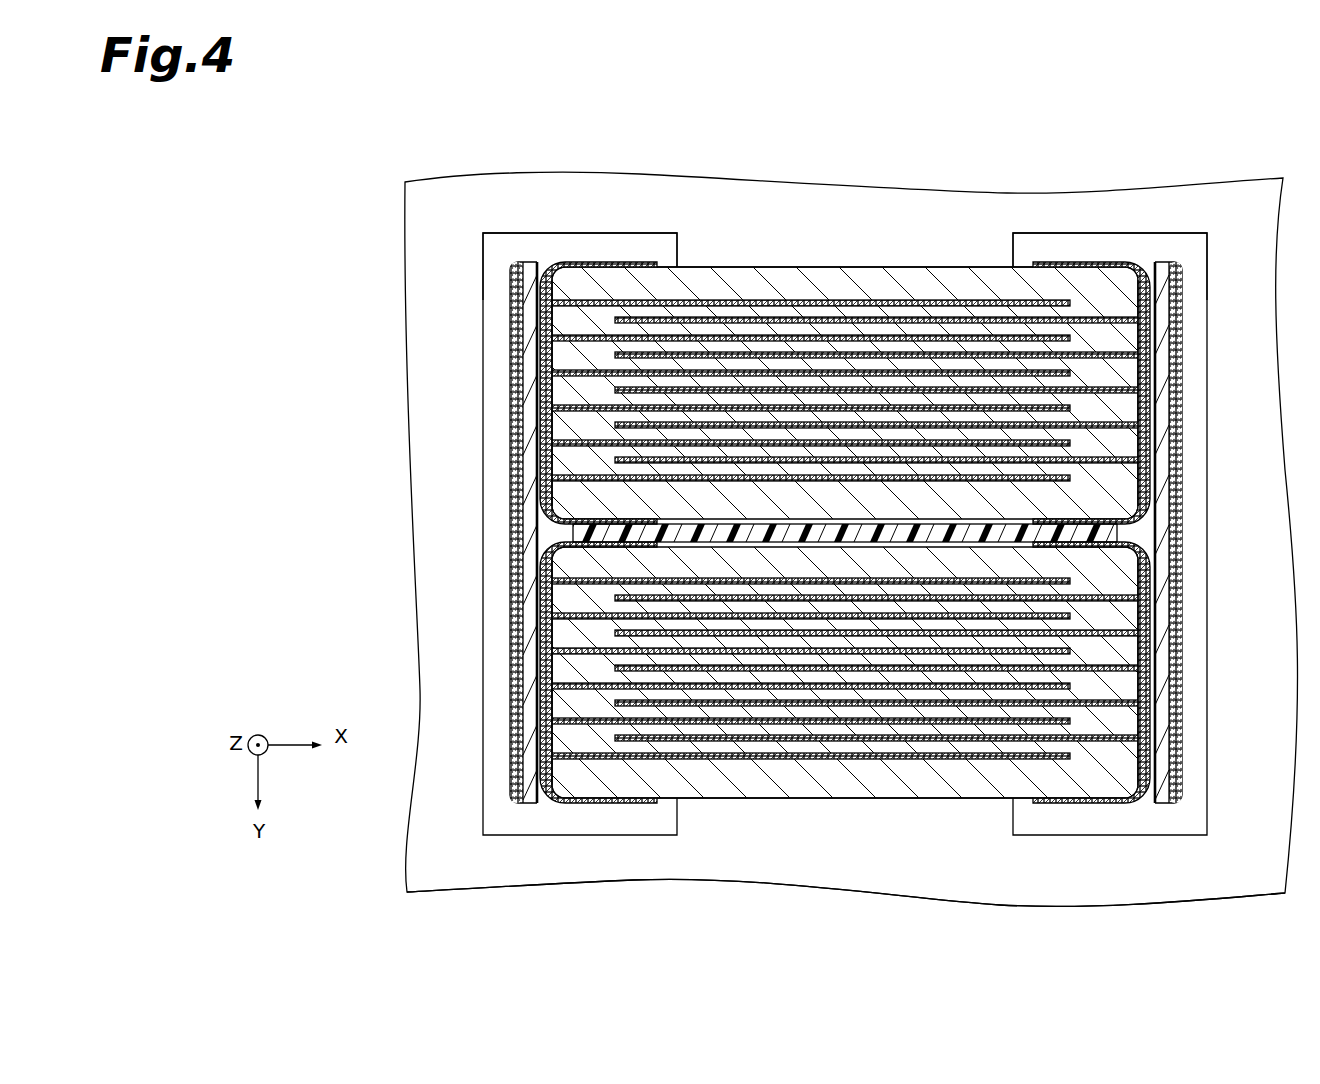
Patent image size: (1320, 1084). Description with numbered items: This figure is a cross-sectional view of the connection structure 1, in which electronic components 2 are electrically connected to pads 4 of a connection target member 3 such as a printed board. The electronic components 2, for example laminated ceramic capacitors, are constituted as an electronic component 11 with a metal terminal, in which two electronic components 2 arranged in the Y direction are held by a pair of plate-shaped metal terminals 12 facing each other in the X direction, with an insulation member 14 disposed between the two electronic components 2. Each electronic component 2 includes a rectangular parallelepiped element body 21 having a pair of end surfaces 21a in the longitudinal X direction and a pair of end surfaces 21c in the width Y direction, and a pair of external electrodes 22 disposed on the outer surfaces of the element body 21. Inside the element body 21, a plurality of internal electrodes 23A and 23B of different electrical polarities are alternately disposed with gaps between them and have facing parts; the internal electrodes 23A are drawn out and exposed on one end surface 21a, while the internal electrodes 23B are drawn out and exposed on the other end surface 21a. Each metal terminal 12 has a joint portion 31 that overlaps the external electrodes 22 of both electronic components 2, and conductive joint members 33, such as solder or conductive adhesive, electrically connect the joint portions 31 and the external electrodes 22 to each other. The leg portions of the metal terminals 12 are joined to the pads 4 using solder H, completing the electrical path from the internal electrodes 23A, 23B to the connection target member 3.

The connection structure 1 is at (415, 166).
The electronic component 2 is at (854, 533).
The connection target member 3 is at (872, 884).
The pad 4 is at (515, 253).
The electronic component with a metal terminal 11 is at (1210, 204).
The metal terminal 12 is at (510, 560).
The insulation member 14 is at (1000, 527).
The element body 21 is at (893, 258).
The end surface 21a is at (545, 390).
The end surface 21c is at (828, 262).
The external electrode 22 is at (588, 262).
The internal electrode 23A is at (722, 338).
The internal electrode 23B is at (988, 355).
The joint portion 31 is at (536, 596).
The joint member 33 is at (517, 360).
The solder H is at (510, 463).